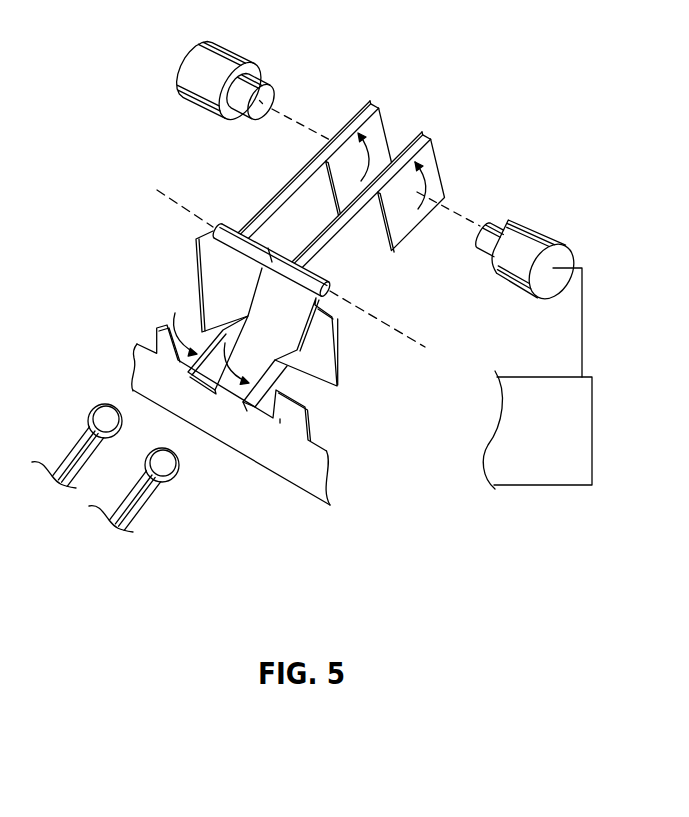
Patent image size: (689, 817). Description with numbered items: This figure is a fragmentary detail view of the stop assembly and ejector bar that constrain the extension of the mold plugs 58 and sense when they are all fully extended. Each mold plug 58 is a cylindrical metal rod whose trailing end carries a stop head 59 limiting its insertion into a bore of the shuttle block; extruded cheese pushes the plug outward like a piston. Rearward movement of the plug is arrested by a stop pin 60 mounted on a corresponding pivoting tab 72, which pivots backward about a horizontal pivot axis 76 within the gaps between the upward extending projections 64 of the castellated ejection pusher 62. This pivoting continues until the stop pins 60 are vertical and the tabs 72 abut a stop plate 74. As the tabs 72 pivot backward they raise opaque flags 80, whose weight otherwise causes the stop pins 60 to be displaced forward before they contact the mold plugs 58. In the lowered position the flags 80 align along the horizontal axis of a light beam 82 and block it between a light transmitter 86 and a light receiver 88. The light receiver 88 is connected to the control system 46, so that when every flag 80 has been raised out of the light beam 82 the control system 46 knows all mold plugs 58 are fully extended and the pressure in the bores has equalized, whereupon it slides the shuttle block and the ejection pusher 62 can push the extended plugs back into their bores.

The control system 46 is at (557, 438).
The mold plug 58 is at (133, 482).
The stop head 59 is at (164, 481).
The stop pin 60 is at (212, 322).
The castellated ejection pusher 62 is at (326, 452).
The projection 64 is at (280, 419).
The pivoting tab 72 is at (272, 315).
The stop plate 74 is at (326, 354).
The pivot shaft 76 is at (377, 321).
The opaque flag 80 is at (429, 156).
The light beam 82 is at (457, 213).
The light transmitter 86 is at (222, 46).
The light receiver 88 is at (540, 223).